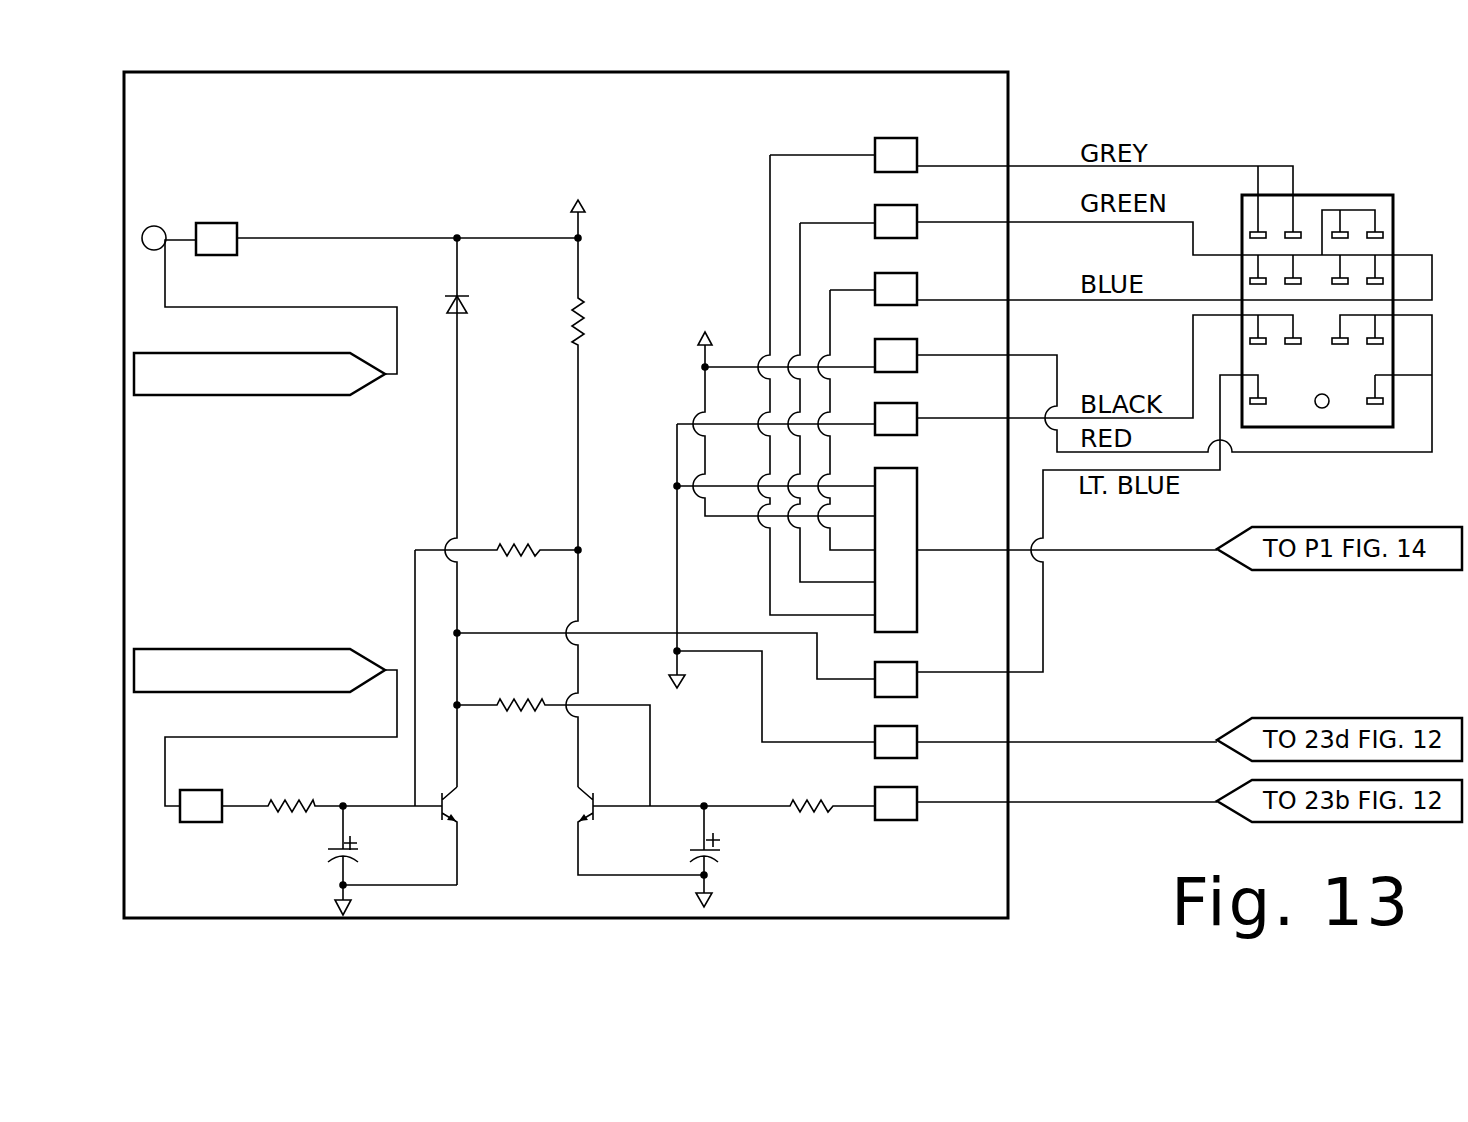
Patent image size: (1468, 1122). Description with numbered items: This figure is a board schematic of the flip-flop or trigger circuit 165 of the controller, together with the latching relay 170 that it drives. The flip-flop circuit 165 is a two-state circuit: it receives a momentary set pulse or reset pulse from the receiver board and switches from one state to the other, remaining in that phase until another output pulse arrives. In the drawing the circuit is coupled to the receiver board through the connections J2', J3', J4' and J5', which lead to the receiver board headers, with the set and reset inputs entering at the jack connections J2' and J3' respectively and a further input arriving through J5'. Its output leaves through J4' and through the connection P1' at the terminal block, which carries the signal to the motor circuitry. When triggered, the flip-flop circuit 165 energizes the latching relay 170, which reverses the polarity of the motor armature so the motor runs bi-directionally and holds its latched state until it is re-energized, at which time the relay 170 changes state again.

The flip-flop circuit 165 is at (608, 495).
The latching relay 170 is at (1386, 195).
The jack 5 connection J5' is at (269, 273).
The jack 3 connection J3' is at (281, 738).
The terminal block connection P1' is at (1067, 582).
The jack 4 connection J4' is at (1067, 717).
The jack 2 connection J2' is at (1067, 835).